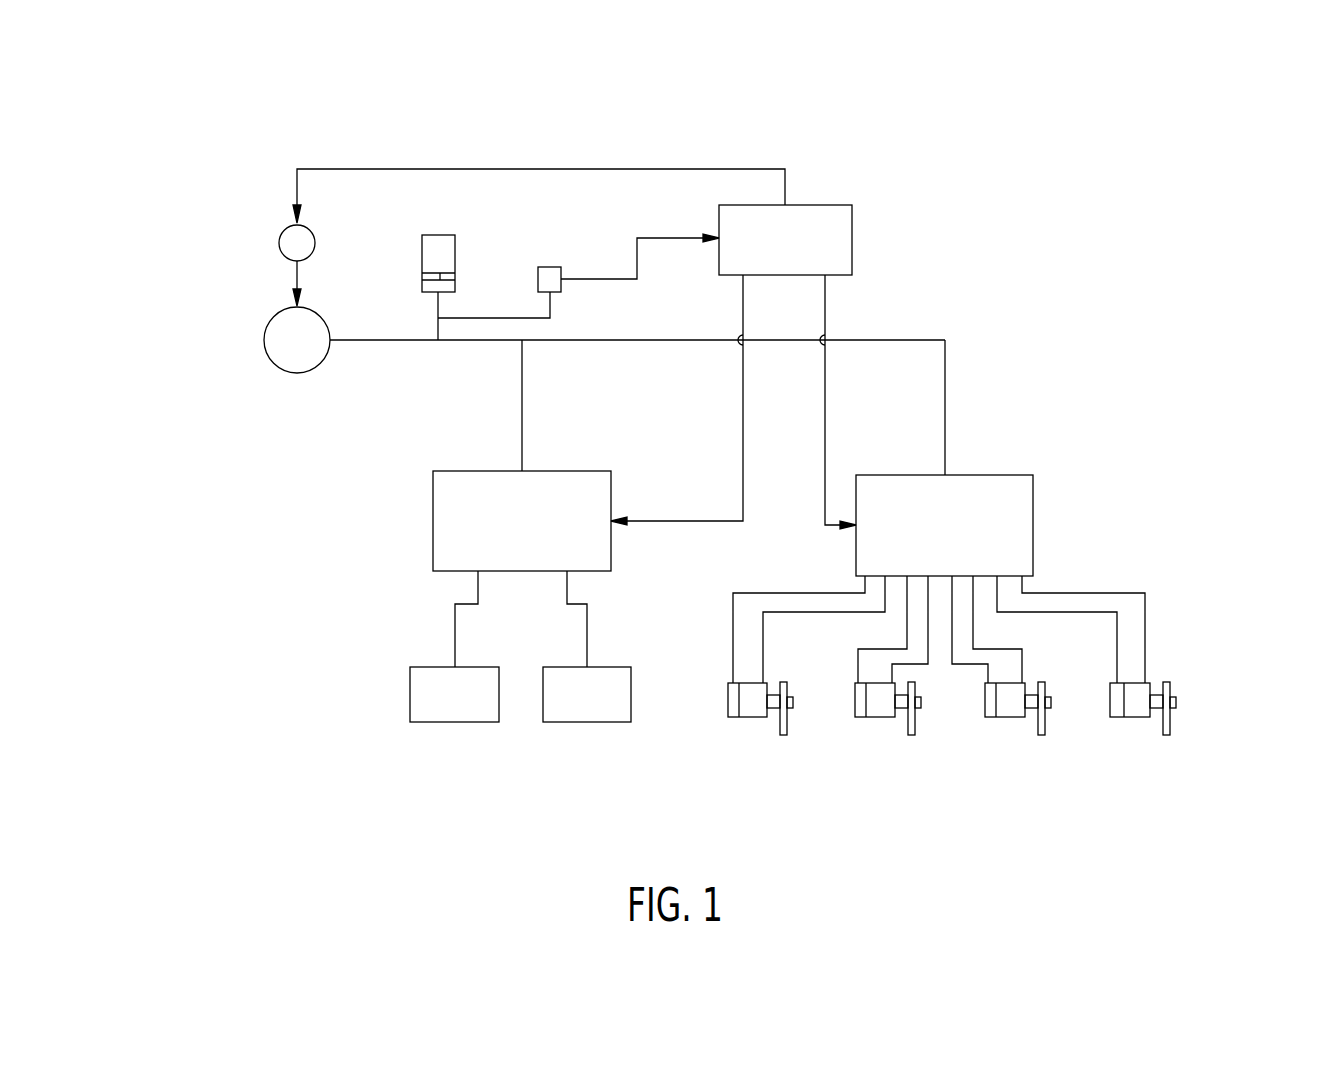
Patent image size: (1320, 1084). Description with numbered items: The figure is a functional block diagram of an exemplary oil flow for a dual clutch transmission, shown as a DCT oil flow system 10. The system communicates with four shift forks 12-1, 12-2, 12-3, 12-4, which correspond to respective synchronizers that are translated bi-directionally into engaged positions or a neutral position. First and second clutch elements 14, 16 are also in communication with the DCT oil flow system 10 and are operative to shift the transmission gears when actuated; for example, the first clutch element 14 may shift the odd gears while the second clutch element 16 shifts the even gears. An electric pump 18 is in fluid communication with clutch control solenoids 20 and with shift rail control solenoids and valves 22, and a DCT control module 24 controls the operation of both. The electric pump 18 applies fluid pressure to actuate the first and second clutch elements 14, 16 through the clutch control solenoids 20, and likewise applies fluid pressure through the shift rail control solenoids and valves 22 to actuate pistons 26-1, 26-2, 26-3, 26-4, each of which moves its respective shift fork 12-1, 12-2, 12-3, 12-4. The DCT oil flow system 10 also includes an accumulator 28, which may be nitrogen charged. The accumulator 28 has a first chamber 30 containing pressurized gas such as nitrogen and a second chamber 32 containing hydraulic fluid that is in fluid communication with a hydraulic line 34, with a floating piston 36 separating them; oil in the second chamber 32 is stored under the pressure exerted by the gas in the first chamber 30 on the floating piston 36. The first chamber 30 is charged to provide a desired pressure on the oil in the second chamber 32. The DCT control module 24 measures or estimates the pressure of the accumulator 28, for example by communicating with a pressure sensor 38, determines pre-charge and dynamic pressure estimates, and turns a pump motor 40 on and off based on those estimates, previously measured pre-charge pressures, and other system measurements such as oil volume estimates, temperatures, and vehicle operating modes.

The DCT oil flow system 10 is at (205, 150).
The shift fork 12-1 is at (787, 735).
The shift fork 12-2 is at (912, 735).
The shift fork 12-3 is at (1043, 735).
The shift fork 12-4 is at (1171, 722).
The first clutch element 14 is at (410, 702).
The second clutch element 16 is at (631, 700).
The electric pump 18 is at (265, 345).
The clutch control solenoids 20 is at (433, 530).
The shift rail control solenoids and valves 22 is at (1033, 530).
The DCT control module 24 is at (852, 243).
The piston 26-1 is at (728, 708).
The piston 26-2 is at (873, 718).
The piston 26-3 is at (1005, 718).
The piston 26-4 is at (1130, 718).
The accumulator 28 is at (437, 210).
The first chamber 30 is at (430, 248).
The second chamber 32 is at (428, 284).
The hydraulic line 34 is at (410, 343).
The floating piston 36 is at (452, 277).
The pressure sensor 38 is at (548, 267).
The pump motor 40 is at (280, 245).